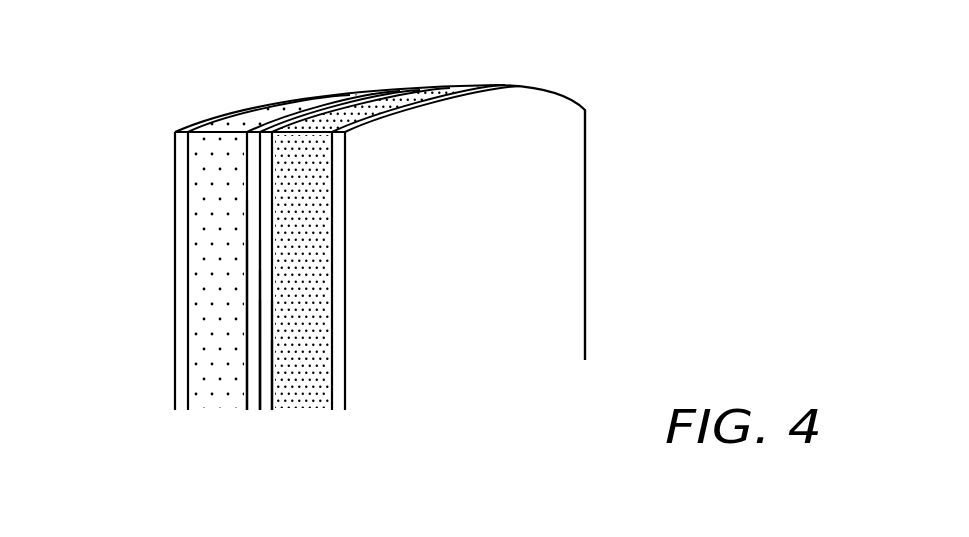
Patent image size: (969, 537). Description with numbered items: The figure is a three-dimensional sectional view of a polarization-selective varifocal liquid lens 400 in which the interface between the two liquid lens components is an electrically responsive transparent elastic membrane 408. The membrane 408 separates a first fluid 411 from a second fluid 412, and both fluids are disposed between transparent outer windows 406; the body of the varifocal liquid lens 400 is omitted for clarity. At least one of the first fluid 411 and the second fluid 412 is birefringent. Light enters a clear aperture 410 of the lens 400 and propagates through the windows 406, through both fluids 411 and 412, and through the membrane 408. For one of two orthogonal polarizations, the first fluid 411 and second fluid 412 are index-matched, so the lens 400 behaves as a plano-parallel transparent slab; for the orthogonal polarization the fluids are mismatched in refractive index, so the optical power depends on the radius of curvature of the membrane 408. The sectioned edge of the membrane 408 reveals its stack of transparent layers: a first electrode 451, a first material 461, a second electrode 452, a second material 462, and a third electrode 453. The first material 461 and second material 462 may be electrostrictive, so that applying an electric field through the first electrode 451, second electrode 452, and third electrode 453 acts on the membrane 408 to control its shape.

The varifocal liquid lens 400 is at (652, 90).
The transparent outer windows 406 is at (182, 155).
The electrically responsive transparent elastic membrane 408 is at (239, 425).
The clear aperture 410 is at (614, 313).
The first fluid 411 is at (197, 193).
The second fluid 412 is at (318, 393).
The first electrode 451 is at (246, 228).
The second electrode 452 is at (260, 300).
The third electrode 453 is at (270, 375).
The first material 461 is at (255, 268).
The second material 462 is at (265, 337).